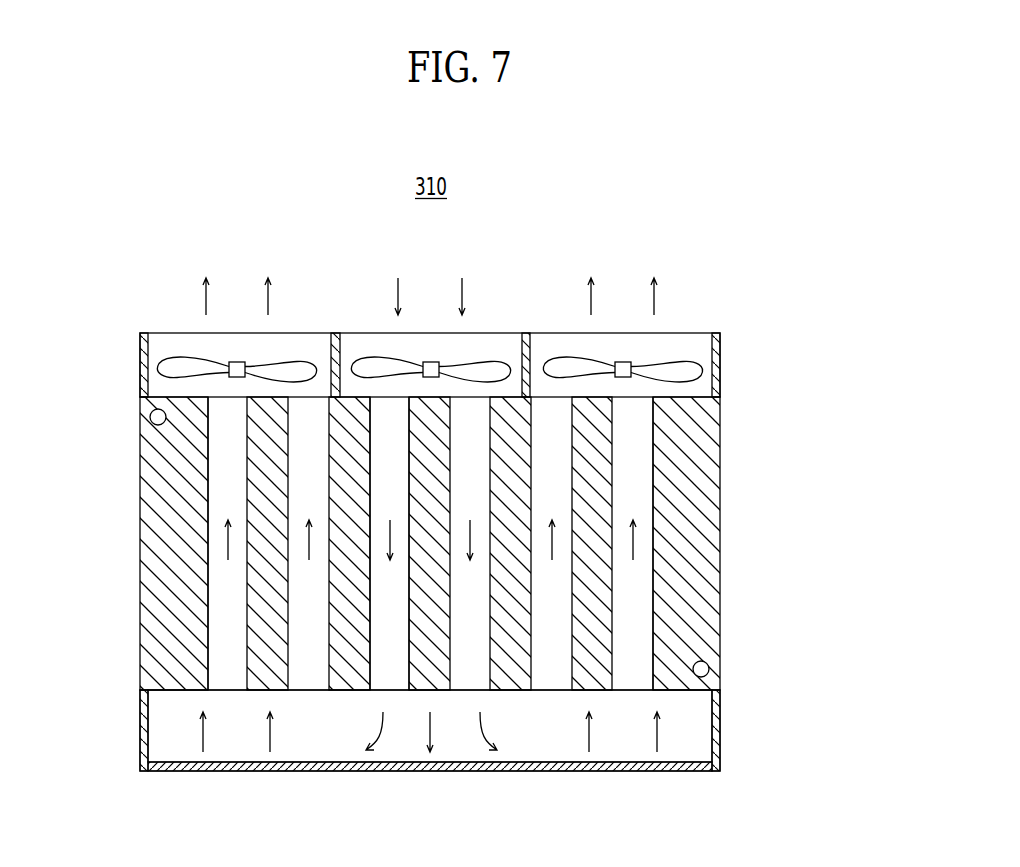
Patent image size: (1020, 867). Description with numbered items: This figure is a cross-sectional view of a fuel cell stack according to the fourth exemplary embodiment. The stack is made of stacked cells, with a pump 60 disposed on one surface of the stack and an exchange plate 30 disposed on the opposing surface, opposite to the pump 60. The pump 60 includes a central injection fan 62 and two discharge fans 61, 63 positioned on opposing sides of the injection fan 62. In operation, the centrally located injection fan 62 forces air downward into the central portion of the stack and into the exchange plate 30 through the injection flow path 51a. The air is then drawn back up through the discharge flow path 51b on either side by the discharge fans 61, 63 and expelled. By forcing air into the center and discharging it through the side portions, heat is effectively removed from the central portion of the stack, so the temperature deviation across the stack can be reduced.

The exchange plate 30 is at (717, 734).
The injection flow path 51a is at (393, 657).
The discharge flow path 51b is at (228, 612).
The pump 60 is at (728, 357).
The discharge fan 61 is at (292, 363).
The injection fan 62 is at (486, 363).
The discharge fan 63 is at (681, 363).